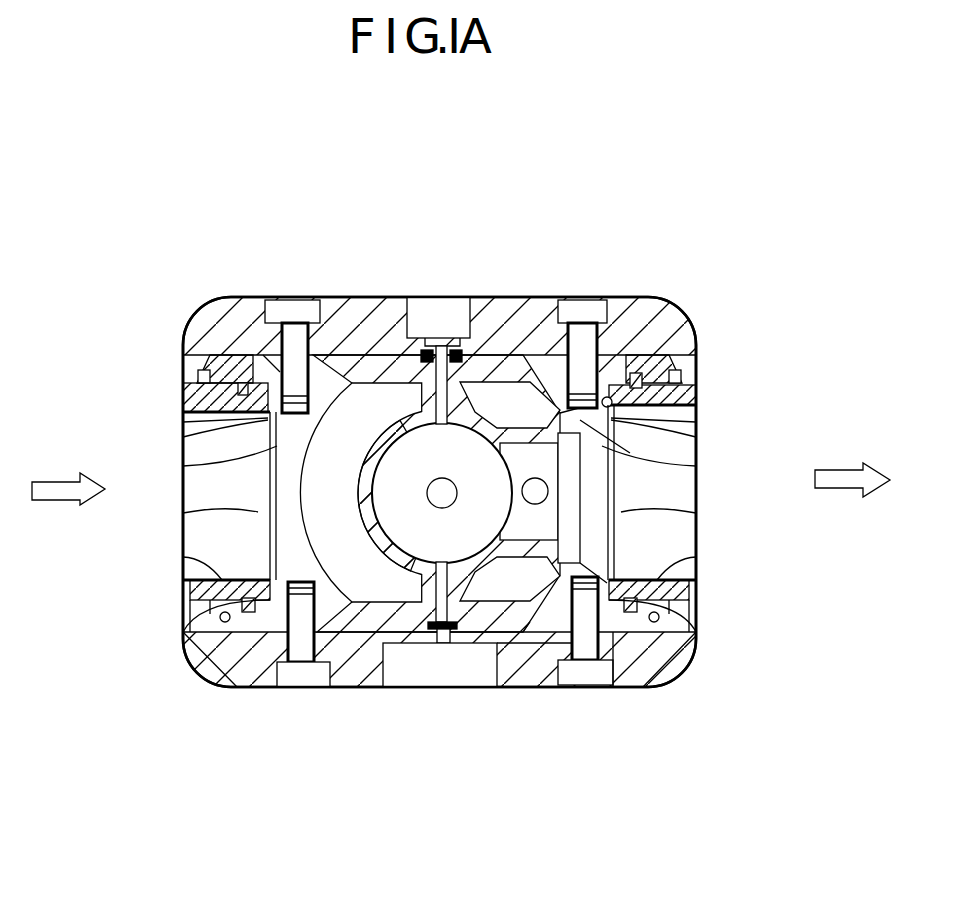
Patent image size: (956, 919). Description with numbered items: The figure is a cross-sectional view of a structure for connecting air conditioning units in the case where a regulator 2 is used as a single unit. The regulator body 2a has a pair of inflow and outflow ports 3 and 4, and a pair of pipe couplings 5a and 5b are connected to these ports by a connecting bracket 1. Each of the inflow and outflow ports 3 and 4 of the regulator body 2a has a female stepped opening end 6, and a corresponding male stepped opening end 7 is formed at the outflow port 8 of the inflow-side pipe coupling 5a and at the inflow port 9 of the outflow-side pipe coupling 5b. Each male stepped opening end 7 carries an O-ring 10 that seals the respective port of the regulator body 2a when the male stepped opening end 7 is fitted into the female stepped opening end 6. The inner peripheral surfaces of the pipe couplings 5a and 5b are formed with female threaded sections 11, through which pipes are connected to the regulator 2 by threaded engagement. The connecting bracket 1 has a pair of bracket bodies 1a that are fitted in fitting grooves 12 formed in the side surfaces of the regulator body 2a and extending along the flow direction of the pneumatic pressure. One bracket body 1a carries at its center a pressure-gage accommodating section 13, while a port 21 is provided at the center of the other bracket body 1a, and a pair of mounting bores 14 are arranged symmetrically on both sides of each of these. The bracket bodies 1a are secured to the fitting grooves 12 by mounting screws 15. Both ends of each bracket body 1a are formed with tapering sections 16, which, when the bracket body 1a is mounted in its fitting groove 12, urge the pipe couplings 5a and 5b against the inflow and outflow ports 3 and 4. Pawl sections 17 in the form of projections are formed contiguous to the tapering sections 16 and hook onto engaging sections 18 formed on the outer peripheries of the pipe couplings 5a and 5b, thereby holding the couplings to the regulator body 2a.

The connecting bracket 1 is at (363, 690).
The bracket body 1a is at (645, 655).
The regulator 2 is at (549, 258).
The regulator body 2a is at (527, 626).
The inflow port 3 is at (302, 440).
The outflow port 4 is at (583, 437).
The inflow-side pipe coupling 5a is at (192, 598).
The outflow-side pipe coupling 5b is at (690, 597).
The female stepped opening end 6 is at (232, 423).
The male stepped opening end 7 is at (240, 408).
The outflow port of inflow-side pipe coupling 8 is at (262, 508).
The inflow port of outflow-side pipe coupling 9 is at (625, 508).
The O-ring 10 is at (212, 375).
The female threaded section 11 is at (192, 558).
The fitting groove 12 is at (478, 655).
The pressure-gage accommodating section 13 is at (418, 673).
The mounting bore 14 is at (600, 688).
The mounting screw 15 is at (288, 322).
The tapering section 16 is at (218, 664).
The pawl section 17 is at (193, 618).
The engaging section 18 is at (198, 630).
The port 21 is at (438, 297).